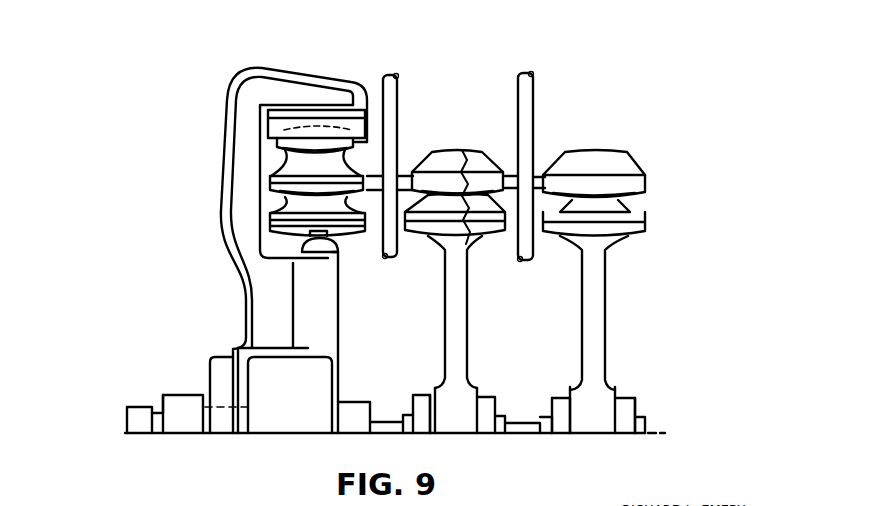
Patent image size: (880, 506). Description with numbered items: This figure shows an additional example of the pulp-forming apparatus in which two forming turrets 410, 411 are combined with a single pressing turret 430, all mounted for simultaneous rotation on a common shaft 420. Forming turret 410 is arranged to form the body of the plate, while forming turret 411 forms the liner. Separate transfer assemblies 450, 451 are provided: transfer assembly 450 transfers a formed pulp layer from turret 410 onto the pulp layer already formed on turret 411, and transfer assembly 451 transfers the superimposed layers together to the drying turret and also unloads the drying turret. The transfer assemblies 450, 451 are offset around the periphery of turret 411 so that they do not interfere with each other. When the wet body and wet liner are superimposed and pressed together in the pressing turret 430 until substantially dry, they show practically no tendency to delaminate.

The forming turret 410 is at (608, 273).
The forming turret 411 is at (473, 283).
The common shaft 420 is at (120, 431).
The pressing turret 430 is at (218, 290).
The transfer assembly 450 is at (545, 106).
The transfer assembly 451 is at (405, 113).